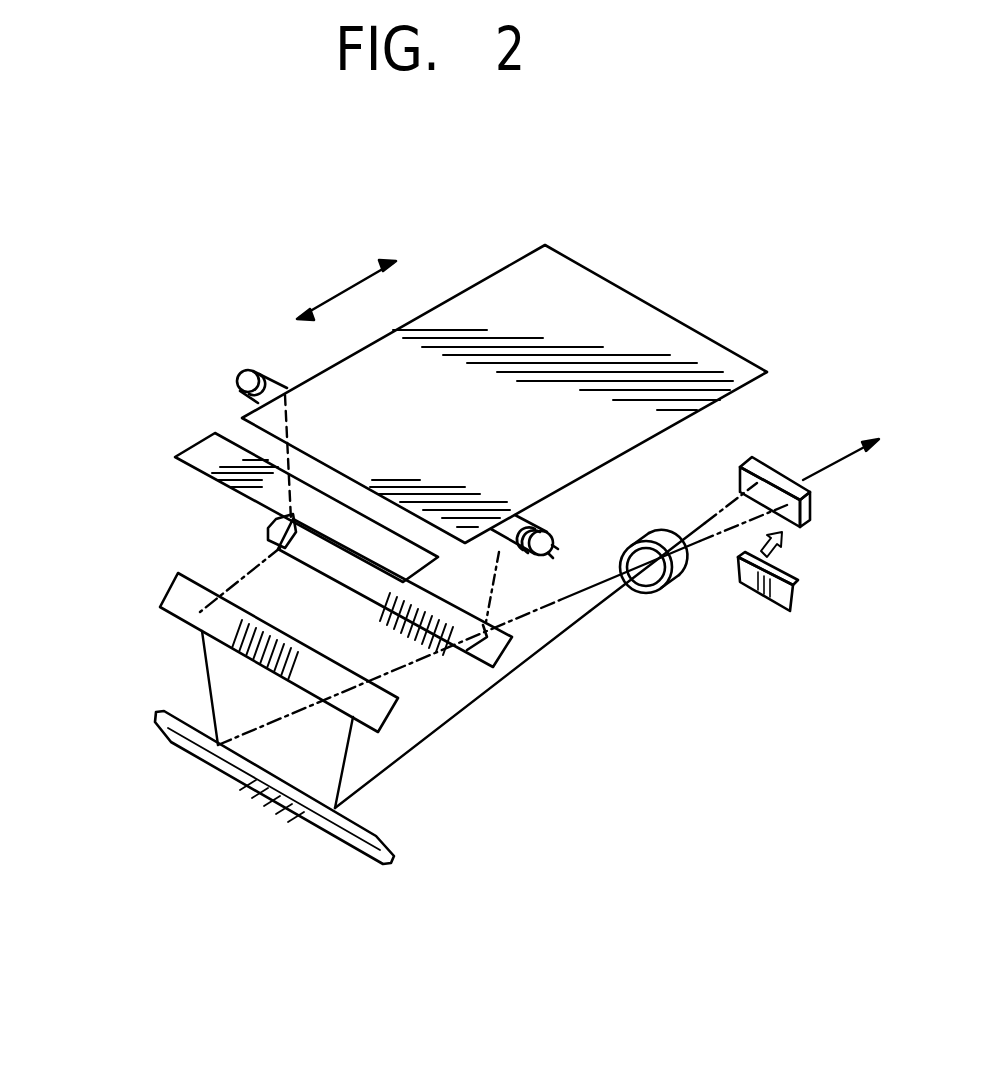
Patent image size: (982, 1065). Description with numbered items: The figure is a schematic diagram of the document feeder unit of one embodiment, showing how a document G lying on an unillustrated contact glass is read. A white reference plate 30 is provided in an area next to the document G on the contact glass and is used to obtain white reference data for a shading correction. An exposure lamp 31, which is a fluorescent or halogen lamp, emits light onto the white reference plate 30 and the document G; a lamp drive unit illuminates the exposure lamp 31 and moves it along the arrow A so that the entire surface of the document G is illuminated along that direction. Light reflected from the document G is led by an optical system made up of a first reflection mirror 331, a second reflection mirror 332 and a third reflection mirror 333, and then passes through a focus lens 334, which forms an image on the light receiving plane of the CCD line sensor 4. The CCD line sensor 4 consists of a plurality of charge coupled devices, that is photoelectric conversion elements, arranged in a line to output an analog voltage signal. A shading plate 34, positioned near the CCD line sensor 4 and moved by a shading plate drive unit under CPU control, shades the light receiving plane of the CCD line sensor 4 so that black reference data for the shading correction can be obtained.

The document G is at (647, 297).
The arrow A is at (346, 284).
The white reference plate 30 is at (190, 447).
The exposure lamp 31 is at (243, 374).
The reflection mirror 331 is at (265, 527).
The reflection mirror 332 is at (160, 607).
The reflection mirror 333 is at (395, 861).
The focus lens 334 is at (693, 587).
The shading plate 34 is at (797, 602).
The CCD line sensor 4 is at (800, 530).